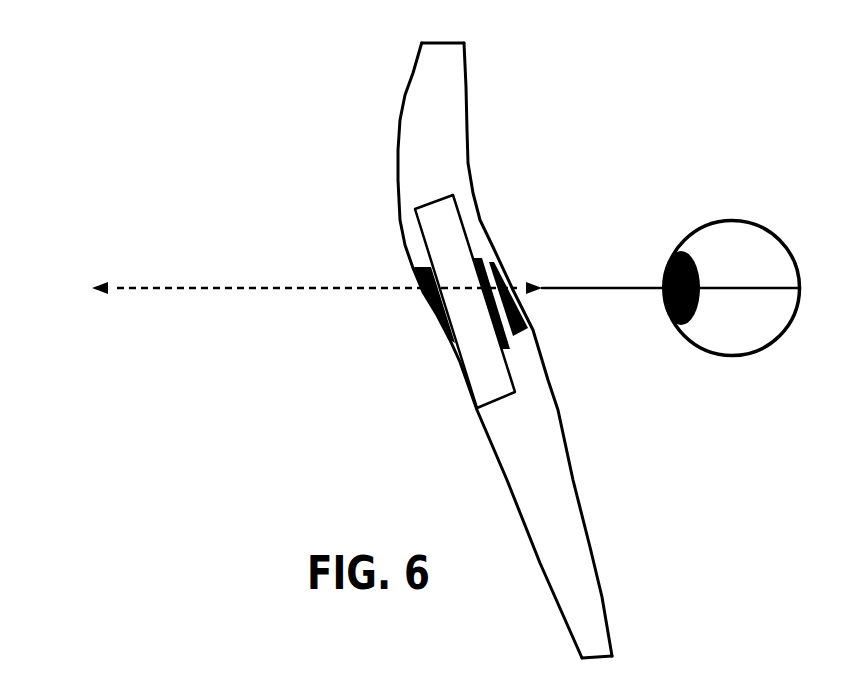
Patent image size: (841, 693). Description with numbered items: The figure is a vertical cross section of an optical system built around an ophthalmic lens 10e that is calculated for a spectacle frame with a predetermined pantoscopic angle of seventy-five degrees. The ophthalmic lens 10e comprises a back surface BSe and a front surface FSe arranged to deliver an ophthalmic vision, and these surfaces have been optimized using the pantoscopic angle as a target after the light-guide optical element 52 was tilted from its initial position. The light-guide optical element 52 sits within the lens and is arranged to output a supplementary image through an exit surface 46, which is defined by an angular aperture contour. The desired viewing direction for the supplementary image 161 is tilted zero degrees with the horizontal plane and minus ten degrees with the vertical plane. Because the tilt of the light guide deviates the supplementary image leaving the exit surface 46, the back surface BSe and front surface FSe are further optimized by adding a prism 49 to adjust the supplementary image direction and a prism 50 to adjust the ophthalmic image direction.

The desired viewing direction for the supplementary image 161 is at (424, 287).
The ophthalmic lens 10e is at (505, 342).
The front surface FSe is at (413, 74).
The back surface BSe is at (470, 69).
The light-guide optical element 52 is at (468, 372).
The exit surface 46 is at (479, 259).
The prism 49 is at (524, 314).
The prism 50 is at (426, 310).